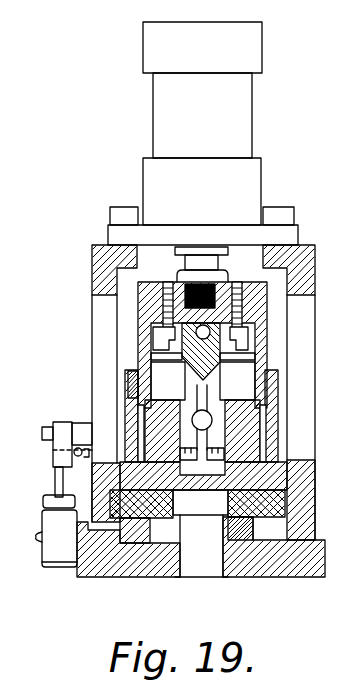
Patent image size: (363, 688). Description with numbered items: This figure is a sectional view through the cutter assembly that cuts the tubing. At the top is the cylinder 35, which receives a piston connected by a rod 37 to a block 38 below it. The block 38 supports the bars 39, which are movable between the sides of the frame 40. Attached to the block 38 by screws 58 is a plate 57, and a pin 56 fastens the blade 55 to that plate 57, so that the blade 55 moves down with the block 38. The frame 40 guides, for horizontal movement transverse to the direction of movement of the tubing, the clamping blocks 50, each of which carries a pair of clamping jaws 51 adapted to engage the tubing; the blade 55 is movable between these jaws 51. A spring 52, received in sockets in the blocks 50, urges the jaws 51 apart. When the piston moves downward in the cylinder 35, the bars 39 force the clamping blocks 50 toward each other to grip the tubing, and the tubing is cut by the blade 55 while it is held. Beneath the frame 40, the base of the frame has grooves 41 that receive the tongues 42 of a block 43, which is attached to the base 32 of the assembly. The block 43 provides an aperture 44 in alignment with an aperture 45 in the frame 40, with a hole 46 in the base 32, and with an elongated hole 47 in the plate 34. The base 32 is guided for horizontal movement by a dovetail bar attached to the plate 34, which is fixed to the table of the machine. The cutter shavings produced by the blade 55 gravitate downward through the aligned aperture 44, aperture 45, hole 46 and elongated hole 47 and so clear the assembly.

The cylinder 35 is at (247, 98).
The rod 37 is at (198, 258).
The block 38 is at (155, 282).
The screws 58 is at (235, 282).
The pin 56 is at (235, 315).
The bars 39 is at (253, 333).
The blade 55 is at (270, 358).
The plate 57 is at (138, 352).
The blocks 50 is at (162, 402).
The clamping jaws 51 is at (183, 410).
The spring 52 is at (185, 440).
The aperture 45 is at (225, 457).
The frame 40 is at (278, 428).
The grooves 41 is at (265, 483).
The tongues 42 is at (220, 474).
The block 43 is at (201, 491).
The aperture 44 is at (203, 514).
The hole 46 is at (216, 518).
The elongated hole 47 is at (188, 565).
The base 32 is at (108, 576).
The plate 34 is at (283, 573).